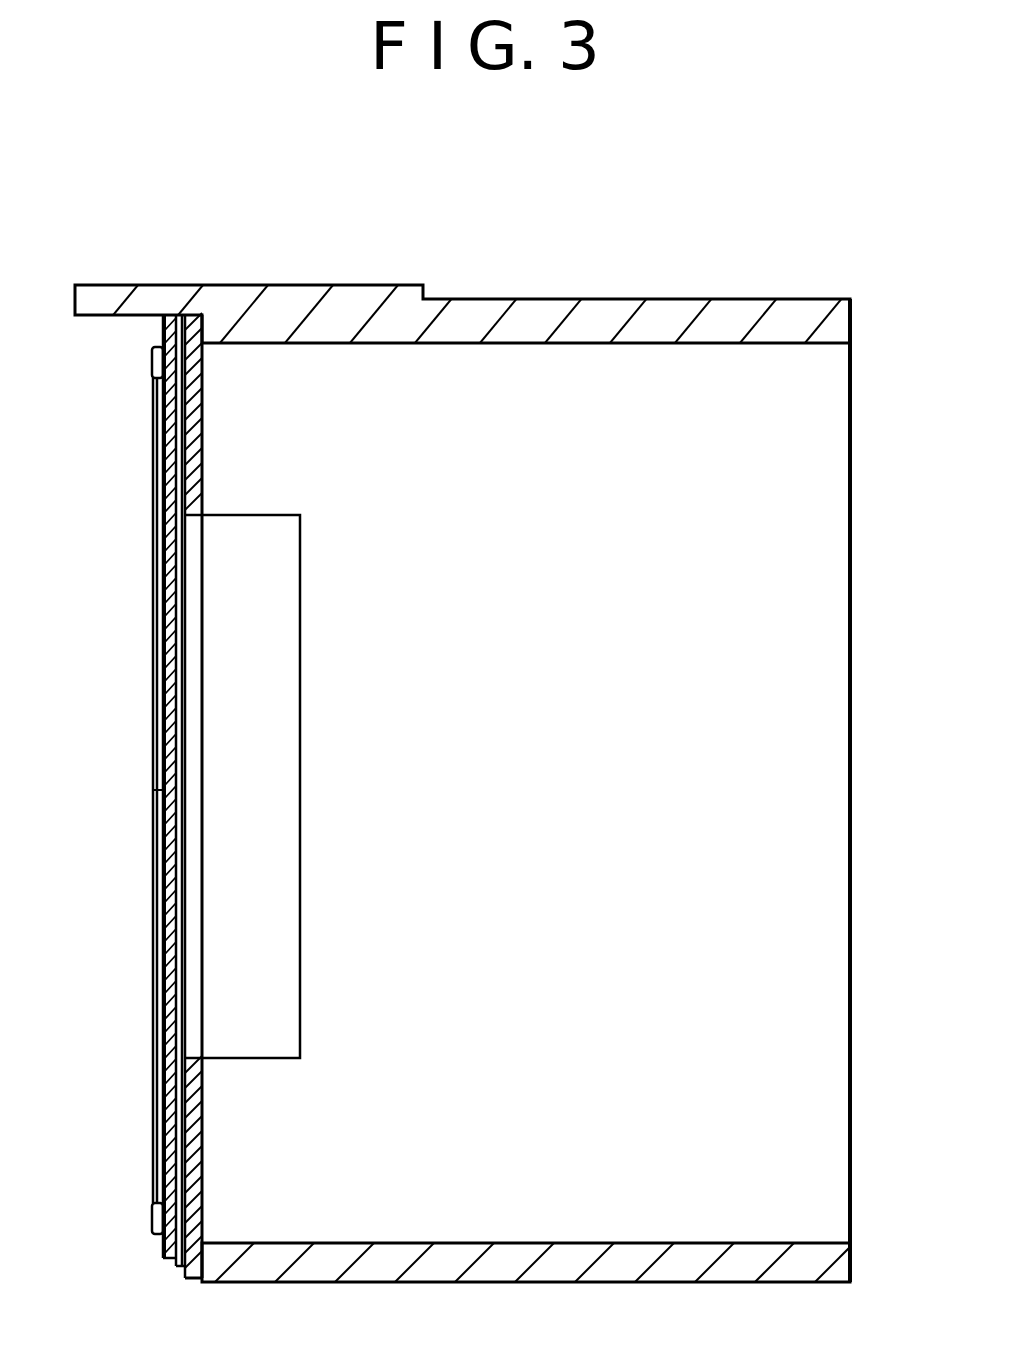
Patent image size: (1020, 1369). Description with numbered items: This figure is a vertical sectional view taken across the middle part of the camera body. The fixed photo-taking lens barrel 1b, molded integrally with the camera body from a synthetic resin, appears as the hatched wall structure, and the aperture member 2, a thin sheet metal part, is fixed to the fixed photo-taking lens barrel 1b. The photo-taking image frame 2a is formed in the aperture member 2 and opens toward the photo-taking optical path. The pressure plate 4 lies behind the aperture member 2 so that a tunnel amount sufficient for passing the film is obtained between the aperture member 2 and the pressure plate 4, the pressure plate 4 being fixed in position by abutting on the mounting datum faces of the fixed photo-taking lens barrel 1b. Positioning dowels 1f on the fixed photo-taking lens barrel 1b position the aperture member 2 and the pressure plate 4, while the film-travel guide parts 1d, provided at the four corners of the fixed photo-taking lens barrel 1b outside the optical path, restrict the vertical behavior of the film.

The fixed photo-taking lens barrel 1b is at (616, 299).
The film-travel guide parts 1d is at (178, 402).
The positioning dowels 1f is at (151, 362).
The aperture member 2 is at (203, 433).
The photo-taking image frame 2a is at (192, 517).
The pressure plate 4 is at (167, 665).